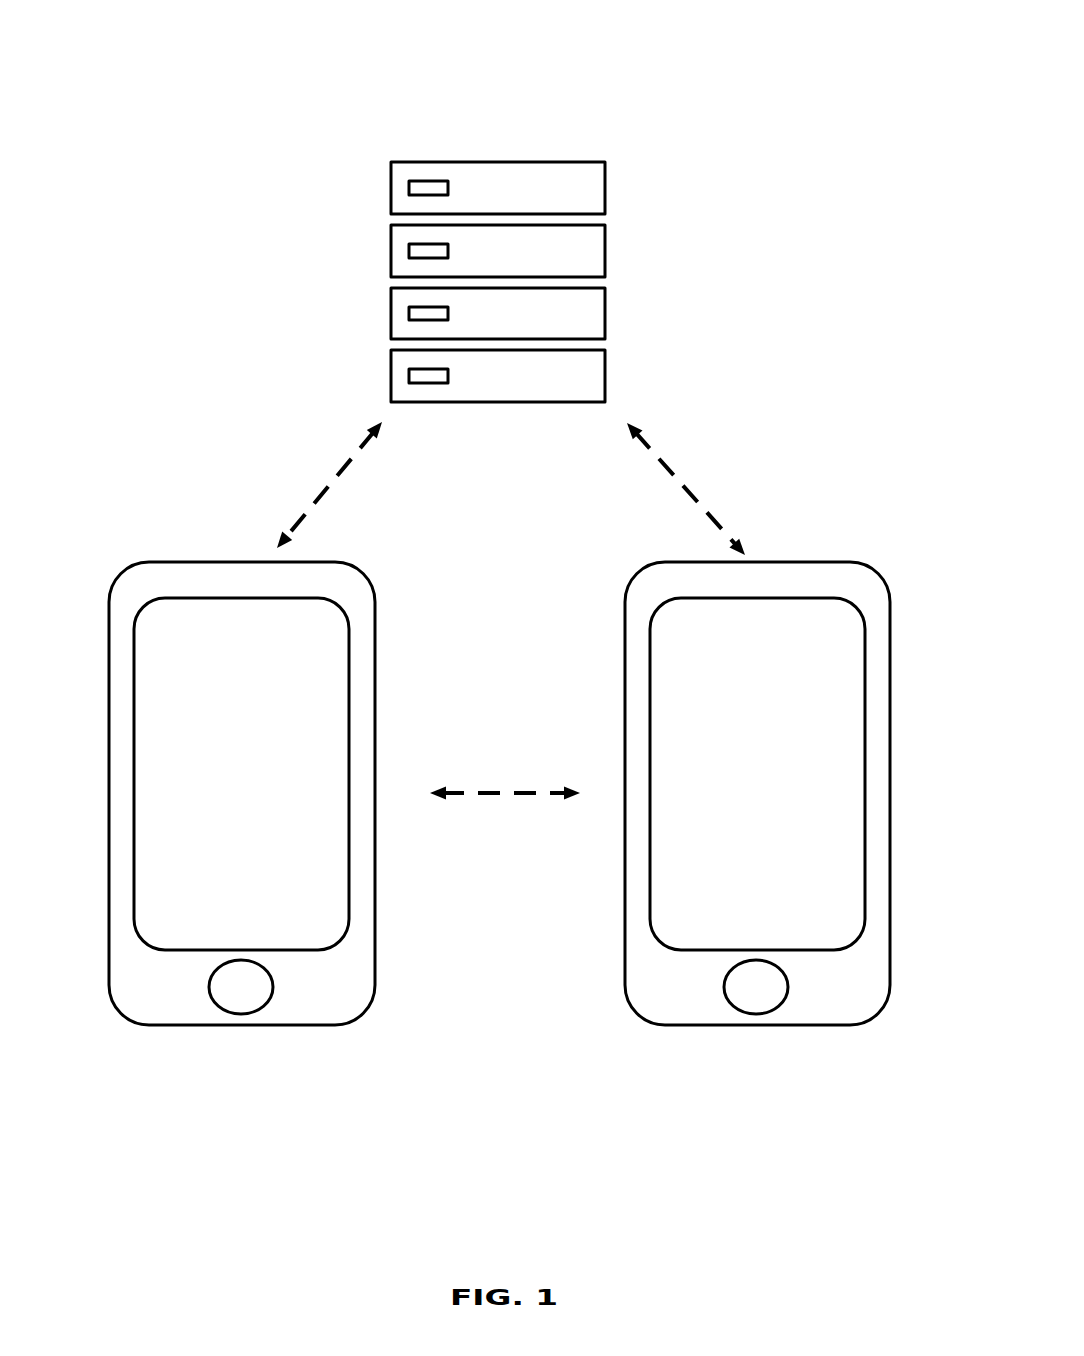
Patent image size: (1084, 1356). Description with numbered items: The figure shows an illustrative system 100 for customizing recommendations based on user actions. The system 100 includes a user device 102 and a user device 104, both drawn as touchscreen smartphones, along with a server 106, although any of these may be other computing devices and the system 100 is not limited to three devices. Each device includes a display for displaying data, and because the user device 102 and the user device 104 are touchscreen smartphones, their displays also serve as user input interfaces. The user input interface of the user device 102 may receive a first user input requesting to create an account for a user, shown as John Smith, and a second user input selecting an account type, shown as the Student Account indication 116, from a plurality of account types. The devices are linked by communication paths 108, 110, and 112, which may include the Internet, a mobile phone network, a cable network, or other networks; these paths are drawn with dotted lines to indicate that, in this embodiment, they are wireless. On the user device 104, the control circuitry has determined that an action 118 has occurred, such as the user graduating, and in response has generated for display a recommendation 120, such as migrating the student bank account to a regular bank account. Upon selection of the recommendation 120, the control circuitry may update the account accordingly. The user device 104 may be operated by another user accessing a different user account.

The system 100 is at (468, 27).
The user device 102 is at (212, 749).
The user device 104 is at (788, 749).
The server 106 is at (624, 147).
The communication path 108 is at (301, 447).
The communication path 110 is at (698, 430).
The communication path 112 is at (488, 762).
The account type indicator 116 is at (177, 802).
The action 118 is at (821, 663).
The recommendation 120 is at (821, 765).